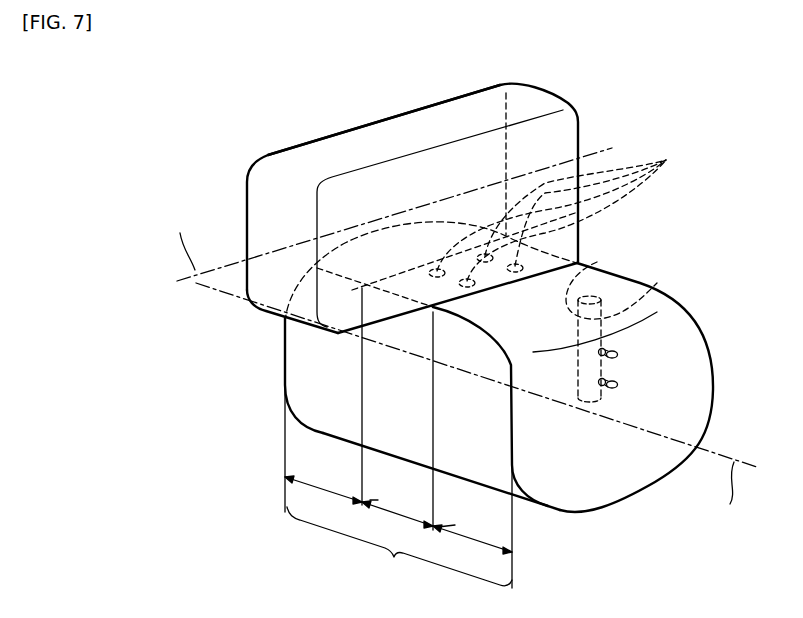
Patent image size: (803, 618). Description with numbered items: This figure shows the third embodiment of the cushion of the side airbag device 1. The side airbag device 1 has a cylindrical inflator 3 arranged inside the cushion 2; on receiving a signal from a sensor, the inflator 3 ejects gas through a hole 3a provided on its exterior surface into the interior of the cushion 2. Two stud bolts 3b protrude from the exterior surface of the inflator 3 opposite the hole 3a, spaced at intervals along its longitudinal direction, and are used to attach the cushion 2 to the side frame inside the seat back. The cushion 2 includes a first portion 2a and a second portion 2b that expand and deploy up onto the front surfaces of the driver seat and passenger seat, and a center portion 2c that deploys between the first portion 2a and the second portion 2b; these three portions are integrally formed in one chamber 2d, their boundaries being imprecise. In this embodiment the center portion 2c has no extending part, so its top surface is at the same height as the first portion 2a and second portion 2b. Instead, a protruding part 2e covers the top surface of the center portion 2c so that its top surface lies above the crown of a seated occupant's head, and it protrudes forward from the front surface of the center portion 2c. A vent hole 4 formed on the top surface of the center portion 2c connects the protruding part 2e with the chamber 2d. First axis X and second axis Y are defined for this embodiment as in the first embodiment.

The side airbag device 1 is at (628, 245).
The cushion 2 is at (625, 272).
The first portion 2a is at (472, 533).
The second portion 2b is at (323, 396).
The center portion 2c is at (397, 421).
The chamber 2d is at (398, 486).
The protruding part 2e is at (333, 162).
The inflator 3 is at (657, 283).
The hole 3a is at (596, 260).
The stud bolts 3b is at (618, 386).
The vent hole 4 is at (668, 159).